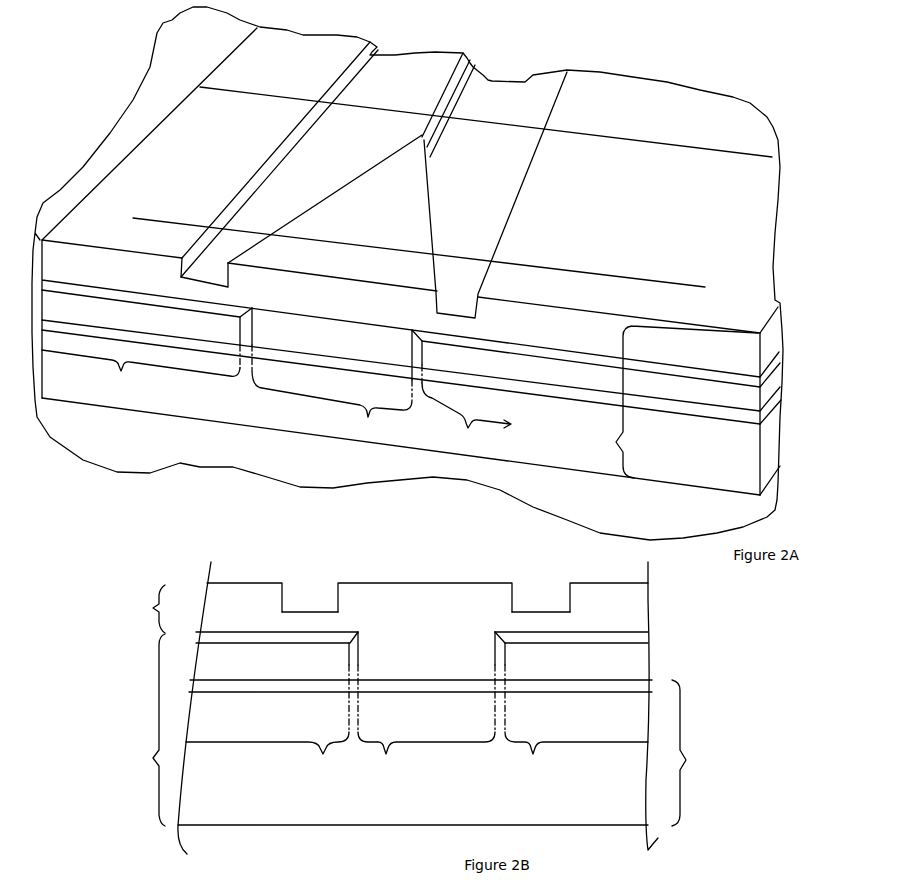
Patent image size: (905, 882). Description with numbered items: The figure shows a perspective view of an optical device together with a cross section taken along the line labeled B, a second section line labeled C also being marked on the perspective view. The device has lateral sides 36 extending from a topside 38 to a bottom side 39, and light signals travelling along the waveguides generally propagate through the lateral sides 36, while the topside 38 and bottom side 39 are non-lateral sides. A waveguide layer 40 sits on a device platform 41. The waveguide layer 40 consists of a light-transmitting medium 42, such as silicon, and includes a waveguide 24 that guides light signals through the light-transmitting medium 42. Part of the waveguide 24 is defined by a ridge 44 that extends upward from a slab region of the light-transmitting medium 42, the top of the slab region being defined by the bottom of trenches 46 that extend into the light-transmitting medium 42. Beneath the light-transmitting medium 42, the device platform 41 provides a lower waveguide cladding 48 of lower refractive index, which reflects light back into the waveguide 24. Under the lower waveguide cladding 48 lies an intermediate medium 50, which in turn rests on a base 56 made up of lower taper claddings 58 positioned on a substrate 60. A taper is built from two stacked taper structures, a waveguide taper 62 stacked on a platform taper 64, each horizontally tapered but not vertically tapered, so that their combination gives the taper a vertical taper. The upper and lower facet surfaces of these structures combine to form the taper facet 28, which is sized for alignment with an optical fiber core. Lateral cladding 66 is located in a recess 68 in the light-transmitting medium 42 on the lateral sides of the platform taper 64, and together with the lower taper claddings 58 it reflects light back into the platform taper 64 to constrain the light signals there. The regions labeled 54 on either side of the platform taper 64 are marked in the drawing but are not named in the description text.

In FIG. 2A, the waveguide 24 is at (458, 56).
In FIG. 2A, the taper facet 28 is at (308, 325).
In FIG. 2A, the lateral sides 36 is at (672, 402).
In FIG. 2A, the topside 38 is at (646, 92).
In FIG. 2A, the bottom side 39 is at (317, 441).
In FIG. 2B, the waveguide layer 40 is at (144, 609).
In FIG. 2B, the device platform 41 is at (385, 729).
In FIG. 2B, the light-transmitting medium 42 is at (257, 592).
In FIG. 2A, the ridge 44 is at (161, 131).
In FIG. 2B, the ridge 44 is at (417, 581).
In FIG. 2A, the trenches 46 is at (488, 82).
In FIG. 2B, the trenches 46 is at (282, 612).
In FIG. 2A, the lower waveguide cladding 48 is at (140, 302).
In FIG. 2B, the lower waveguide cladding 48 is at (253, 644).
In FIG. 2A, the intermediate medium 50 is at (56, 313).
In FIG. 2B, the intermediate medium 50 is at (243, 672).
In FIG. 2A, the pillar section 54 is at (276, 401).
In FIG. 2B, the pillar section 54 is at (417, 755).
In FIG. 2B, the base 56 is at (693, 753).
In FIG. 2A, the lower taper claddings 58 is at (363, 363).
In FIG. 2B, the lower taper claddings 58 is at (436, 688).
In FIG. 2A, the substrate 60 is at (163, 402).
In FIG. 2B, the substrate 60 is at (339, 812).
In FIG. 2A, the waveguide taper 62 is at (433, 189).
In FIG. 2B, the waveguide taper 62 is at (480, 568).
In FIG. 2A, the platform taper 64 is at (332, 405).
In FIG. 2B, the platform taper 64 is at (426, 755).
In FIG. 2A, the lateral cladding 66 is at (247, 330).
In FIG. 2B, the lateral cladding 66 is at (358, 665).
In FIG. 2A, the recess 68 is at (225, 334).
In FIG. 2B, the recess 68 is at (346, 644).
In FIG. 2A, the line B is at (668, 286).
In FIG. 2A, the line C is at (703, 150).